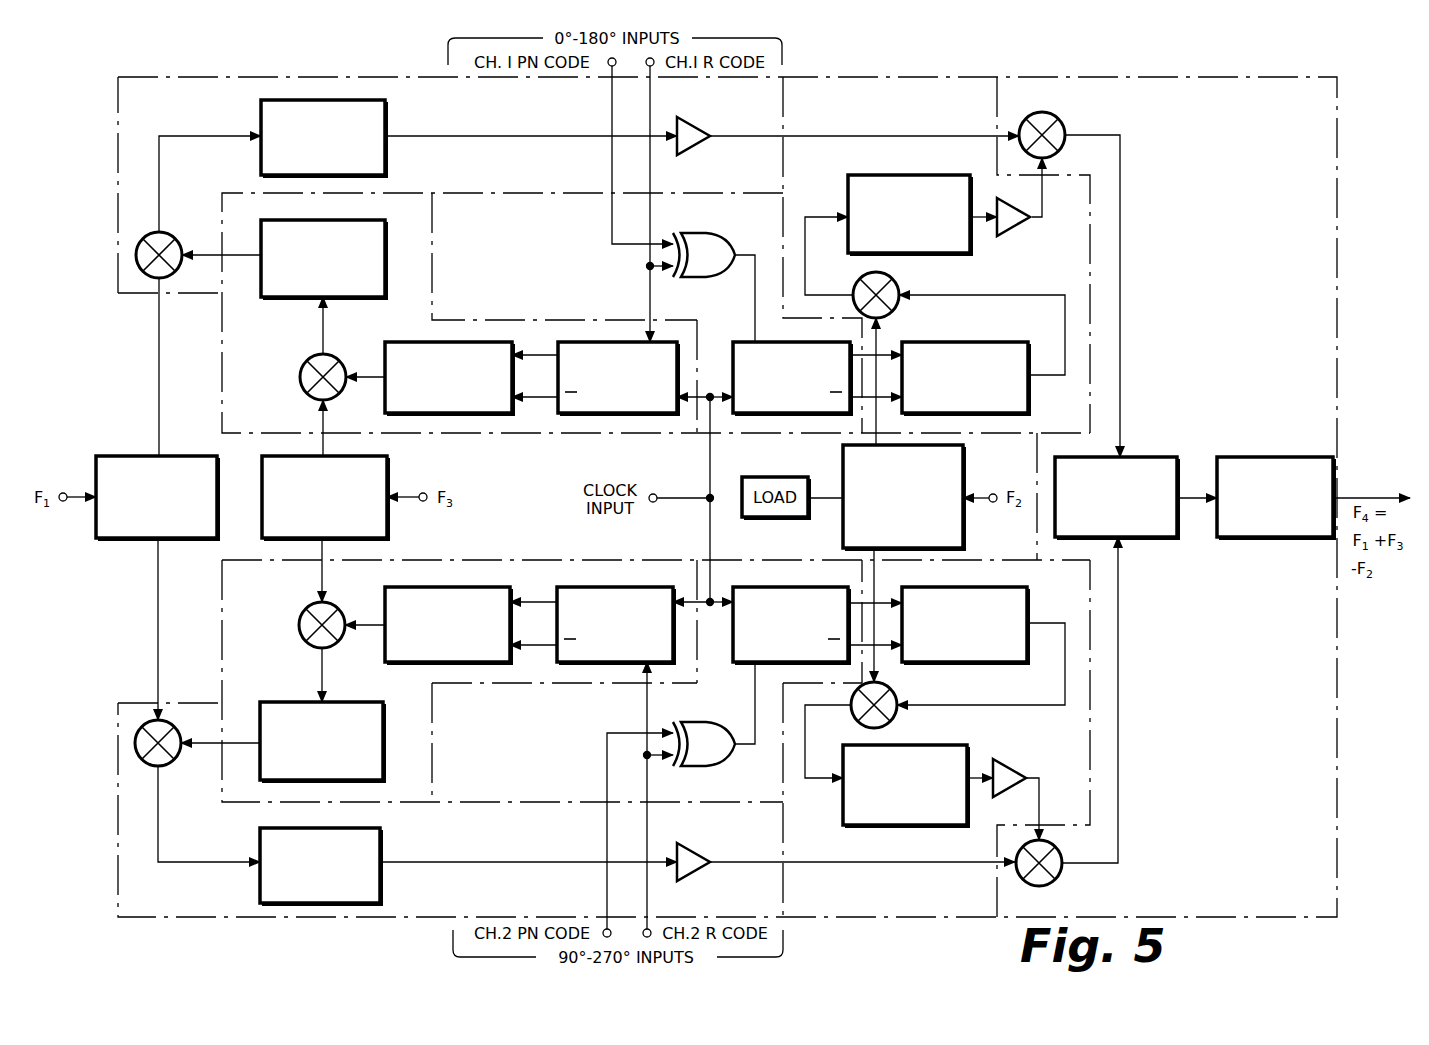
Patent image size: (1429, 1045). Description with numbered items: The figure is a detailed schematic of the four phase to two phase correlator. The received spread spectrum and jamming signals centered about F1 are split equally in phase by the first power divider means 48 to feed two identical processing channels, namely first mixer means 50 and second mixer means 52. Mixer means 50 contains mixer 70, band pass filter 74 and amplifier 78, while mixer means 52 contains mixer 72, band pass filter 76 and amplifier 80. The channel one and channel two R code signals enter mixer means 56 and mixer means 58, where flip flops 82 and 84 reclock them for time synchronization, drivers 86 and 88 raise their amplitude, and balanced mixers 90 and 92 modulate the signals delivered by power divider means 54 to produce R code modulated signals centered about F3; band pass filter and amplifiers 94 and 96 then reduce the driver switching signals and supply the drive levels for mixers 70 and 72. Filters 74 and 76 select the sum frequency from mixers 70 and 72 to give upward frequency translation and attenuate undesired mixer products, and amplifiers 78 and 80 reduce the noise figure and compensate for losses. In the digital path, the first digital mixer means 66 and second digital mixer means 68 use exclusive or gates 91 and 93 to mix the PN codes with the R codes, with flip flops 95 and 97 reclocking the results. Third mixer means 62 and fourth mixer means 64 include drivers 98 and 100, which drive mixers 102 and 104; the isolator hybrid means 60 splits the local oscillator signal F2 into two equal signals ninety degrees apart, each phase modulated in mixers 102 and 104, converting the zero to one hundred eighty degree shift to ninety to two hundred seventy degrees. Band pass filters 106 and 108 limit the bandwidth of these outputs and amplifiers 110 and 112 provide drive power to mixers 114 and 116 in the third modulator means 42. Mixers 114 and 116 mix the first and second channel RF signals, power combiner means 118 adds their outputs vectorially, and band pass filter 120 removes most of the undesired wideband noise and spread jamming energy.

The third modulator means 42 is at (727, 497).
The first power divider means 48 is at (218, 481).
The first mixer means 50 is at (170, 194).
The second mixer means 52 is at (170, 802).
The power divider means 54 is at (388, 481).
The mixer means 56 is at (656, 313).
The mixer means 58 is at (656, 681).
The isolator hybrid means 60 is at (966, 466).
The third mixer means 62 is at (1043, 318).
The fourth mixer means 64 is at (1043, 738).
The first digital mixer means 66 is at (647, 255).
The second digital mixer means 68 is at (647, 738).
The mixer 70 is at (178, 237).
The mixer 72 is at (174, 764).
The band pass filter 74 is at (373, 100).
The band pass filter 76 is at (383, 898).
The amplifier 78 is at (696, 126).
The amplifier 80 is at (704, 878).
The flip flop 82 is at (560, 417).
The flip flop 84 is at (560, 590).
The driver 86 is at (386, 413).
The driver 88 is at (386, 590).
The balanced mixer 90 is at (306, 399).
The exclusive or gate 91 is at (716, 230).
The balanced mixer 92 is at (304, 612).
The exclusive or gate 93 is at (712, 772).
The band pass filter and amplifier 94 is at (350, 298).
The flip flop 95 is at (745, 342).
The band pass filter and amplifier 96 is at (345, 702).
The flip flop 97 is at (740, 662).
The driver 98 is at (990, 342).
The driver 100 is at (985, 663).
The mixer 102 is at (892, 284).
The mixer 104 is at (891, 694).
The band pass filter 106 is at (882, 174).
The band pass filter 108 is at (920, 745).
The amplifier 110 is at (1012, 228).
The amplifier 112 is at (1019, 772).
The mixer 114 is at (1062, 118).
The mixer 116 is at (1056, 881).
The power combiner means 118 is at (1128, 457).
The band pass filter 120 is at (1268, 457).